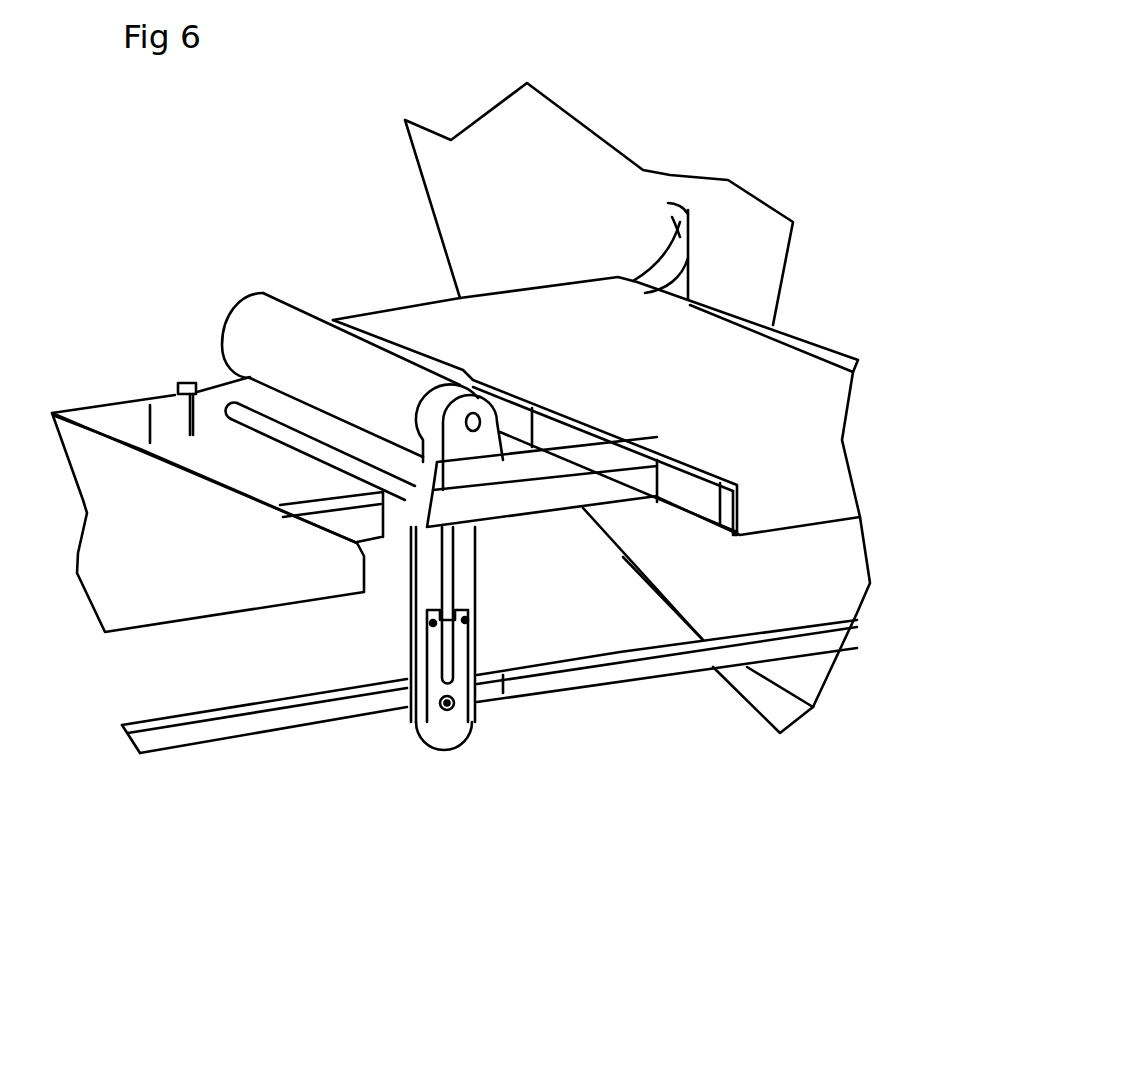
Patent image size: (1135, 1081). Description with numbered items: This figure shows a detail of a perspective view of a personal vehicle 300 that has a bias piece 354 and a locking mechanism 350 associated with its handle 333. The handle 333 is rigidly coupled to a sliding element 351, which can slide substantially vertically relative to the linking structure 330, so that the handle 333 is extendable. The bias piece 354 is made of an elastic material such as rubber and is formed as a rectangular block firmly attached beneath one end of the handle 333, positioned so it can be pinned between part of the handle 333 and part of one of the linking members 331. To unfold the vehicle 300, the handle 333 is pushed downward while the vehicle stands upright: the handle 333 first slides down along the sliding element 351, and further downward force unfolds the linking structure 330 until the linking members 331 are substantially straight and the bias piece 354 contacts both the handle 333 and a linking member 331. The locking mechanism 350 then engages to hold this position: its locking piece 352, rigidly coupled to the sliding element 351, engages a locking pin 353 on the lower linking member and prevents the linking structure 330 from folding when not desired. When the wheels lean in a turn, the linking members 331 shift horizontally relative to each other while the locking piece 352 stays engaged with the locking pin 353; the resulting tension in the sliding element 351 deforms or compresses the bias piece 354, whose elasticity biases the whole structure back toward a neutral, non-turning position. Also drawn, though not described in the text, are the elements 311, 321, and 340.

The vehicle 300 is at (393, 832).
The guide plate 311 is at (762, 704).
The cover panel 321 is at (599, 204).
The linking structure 330 is at (573, 782).
The linking member 331 is at (558, 497).
The handle 333 is at (341, 396).
The side wall 340 is at (461, 492).
The locking mechanism 350 is at (345, 790).
The sliding element 351 is at (420, 563).
The locking piece 352 is at (452, 738).
The locking pin 353 is at (456, 705).
The bias piece 354 is at (492, 470).